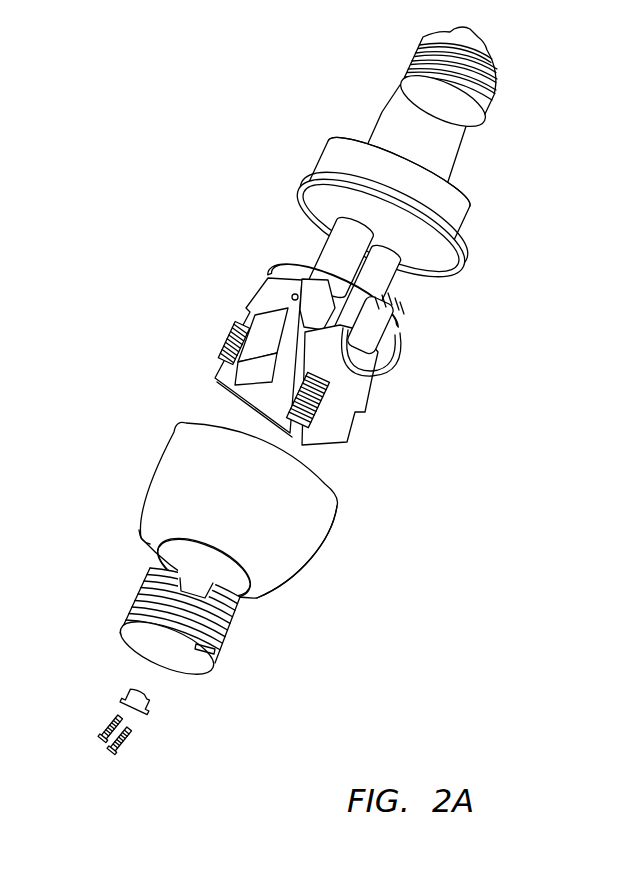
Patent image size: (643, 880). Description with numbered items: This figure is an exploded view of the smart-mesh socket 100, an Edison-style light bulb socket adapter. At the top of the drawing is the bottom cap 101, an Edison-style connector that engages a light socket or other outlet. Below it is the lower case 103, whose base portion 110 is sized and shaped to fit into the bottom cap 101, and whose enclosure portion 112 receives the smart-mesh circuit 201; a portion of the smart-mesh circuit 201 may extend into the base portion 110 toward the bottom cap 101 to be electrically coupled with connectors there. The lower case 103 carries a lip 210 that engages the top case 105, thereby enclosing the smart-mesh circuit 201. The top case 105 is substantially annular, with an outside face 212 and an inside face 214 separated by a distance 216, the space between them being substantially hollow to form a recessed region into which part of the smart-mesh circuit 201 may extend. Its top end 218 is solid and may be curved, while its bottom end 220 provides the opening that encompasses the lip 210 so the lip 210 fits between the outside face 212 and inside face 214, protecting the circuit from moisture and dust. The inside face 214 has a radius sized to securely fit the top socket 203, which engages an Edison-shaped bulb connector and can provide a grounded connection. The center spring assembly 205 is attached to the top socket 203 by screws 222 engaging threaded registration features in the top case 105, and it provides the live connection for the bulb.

The smart-mesh socket 100 is at (140, 157).
The bottom cap 101 is at (494, 75).
The base portion 110 is at (381, 123).
The enclosure portion 112 is at (321, 161).
The lower case 103 is at (455, 196).
The lip 210 is at (443, 269).
The smart-mesh circuit 201 is at (455, 281).
The bottom end 220 is at (197, 401).
The outside face 212 is at (166, 490).
The top case 105 is at (313, 523).
The top end 218 is at (148, 540).
The inside face 214 is at (173, 549).
The top socket 203 is at (220, 654).
The distance 216 is at (258, 616).
The center spring assembly 205 is at (108, 658).
The screws 222 is at (121, 753).